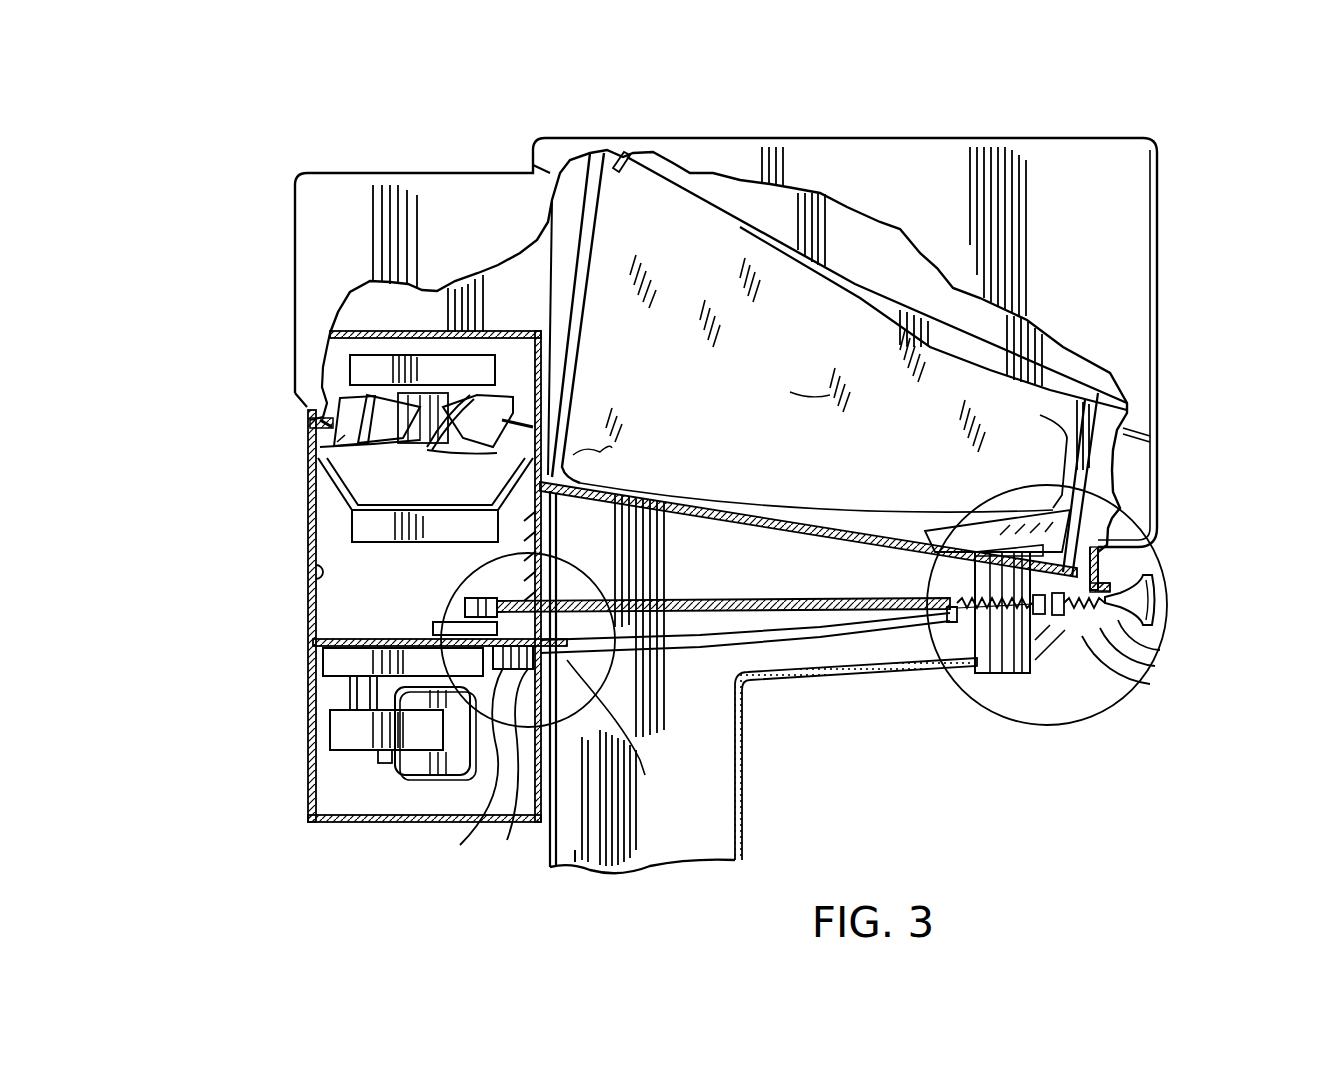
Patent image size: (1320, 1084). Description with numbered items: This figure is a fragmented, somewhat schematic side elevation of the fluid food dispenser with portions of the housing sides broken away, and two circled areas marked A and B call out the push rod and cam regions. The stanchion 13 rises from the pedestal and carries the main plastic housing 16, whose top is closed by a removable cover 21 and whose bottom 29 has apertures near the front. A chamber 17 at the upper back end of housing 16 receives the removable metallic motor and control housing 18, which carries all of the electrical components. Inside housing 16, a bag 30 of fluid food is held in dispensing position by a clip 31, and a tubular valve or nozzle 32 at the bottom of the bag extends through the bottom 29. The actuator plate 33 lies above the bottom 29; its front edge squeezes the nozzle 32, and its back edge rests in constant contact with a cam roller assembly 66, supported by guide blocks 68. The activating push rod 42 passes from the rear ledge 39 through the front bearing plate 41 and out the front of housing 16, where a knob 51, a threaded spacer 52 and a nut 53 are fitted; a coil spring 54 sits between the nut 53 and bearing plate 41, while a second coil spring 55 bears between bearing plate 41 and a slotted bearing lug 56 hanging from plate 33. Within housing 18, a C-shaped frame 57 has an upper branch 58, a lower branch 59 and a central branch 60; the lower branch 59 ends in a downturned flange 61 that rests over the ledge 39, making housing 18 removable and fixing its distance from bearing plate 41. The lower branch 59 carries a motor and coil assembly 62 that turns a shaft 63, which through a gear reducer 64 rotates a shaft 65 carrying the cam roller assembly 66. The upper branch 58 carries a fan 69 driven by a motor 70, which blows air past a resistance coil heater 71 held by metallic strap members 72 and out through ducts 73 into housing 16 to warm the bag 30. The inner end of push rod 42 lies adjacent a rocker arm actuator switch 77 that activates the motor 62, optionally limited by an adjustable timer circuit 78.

The stanchion portion 13 is at (725, 830).
The main plastic housing 16 is at (1173, 473).
The chamber 17 is at (322, 200).
The motor and control housing 18 is at (307, 797).
The removable cover 21 is at (1058, 195).
The bottom 29 is at (815, 665).
The bag 30 is at (680, 255).
The clip 31 is at (626, 165).
The tubular valve or nozzle 32 is at (1002, 665).
The actuator plate 33 is at (812, 657).
The rear ledge 39 is at (575, 850).
The front bearing plate 41 is at (1030, 665).
The activating push rod 42 is at (872, 628).
The knob 51 is at (1157, 582).
The threaded spacer 52 is at (1110, 643).
The nut 53 is at (1112, 675).
The coil spring 54 is at (1038, 677).
The coil spring 55 is at (1035, 640).
The slotted bearing lug 56 is at (967, 657).
The C-shaped frame 57 is at (372, 630).
The upper branch 58 is at (345, 390).
The lower branch 59 is at (340, 663).
The central branch 60 is at (307, 578).
The downturned flange 61 is at (560, 660).
The motor and coil assembly 62 is at (420, 735).
The shaft 63 is at (353, 690).
The gear reducer 64 is at (347, 688).
The shaft 65 is at (437, 627).
The cam roller assembly 66 is at (477, 600).
The guide blocks 68 is at (460, 845).
The fan 69 is at (335, 460).
The motor 70 is at (370, 365).
The resistance coil heater 71 is at (352, 542).
The metallic strap members 72 is at (330, 510).
The ducts 73 is at (540, 538).
The rocker arm actuator switch 77 is at (507, 840).
The adjustable timer circuit 78 is at (387, 763).
The detail A is at (1100, 712).
The detail B is at (663, 862).